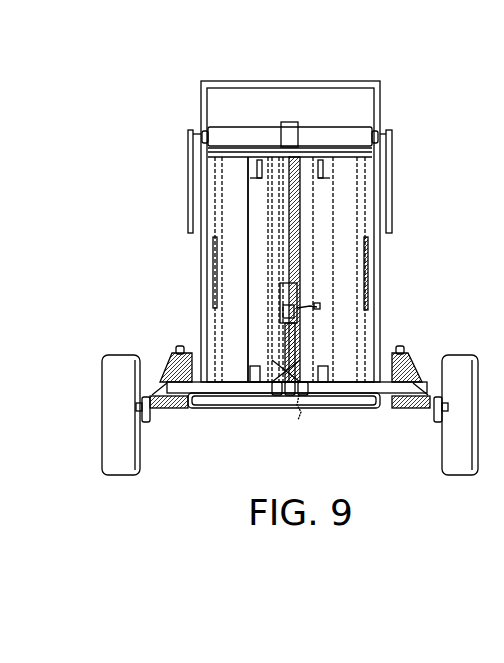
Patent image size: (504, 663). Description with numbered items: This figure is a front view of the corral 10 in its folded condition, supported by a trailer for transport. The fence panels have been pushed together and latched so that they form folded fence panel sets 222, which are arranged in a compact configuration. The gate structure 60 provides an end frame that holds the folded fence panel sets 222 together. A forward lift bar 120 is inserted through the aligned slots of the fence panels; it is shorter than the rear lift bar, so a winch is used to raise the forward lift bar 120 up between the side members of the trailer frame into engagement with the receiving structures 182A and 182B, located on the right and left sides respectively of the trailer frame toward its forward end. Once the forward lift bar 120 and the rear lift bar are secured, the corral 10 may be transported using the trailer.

The corral 10 is at (364, 120).
The gate structure 60 is at (200, 112).
The fence panel set 222 is at (278, 124).
The receiving structure 182A is at (183, 350).
The receiving structure 182B is at (393, 355).
The forward lift bar 120 is at (170, 358).